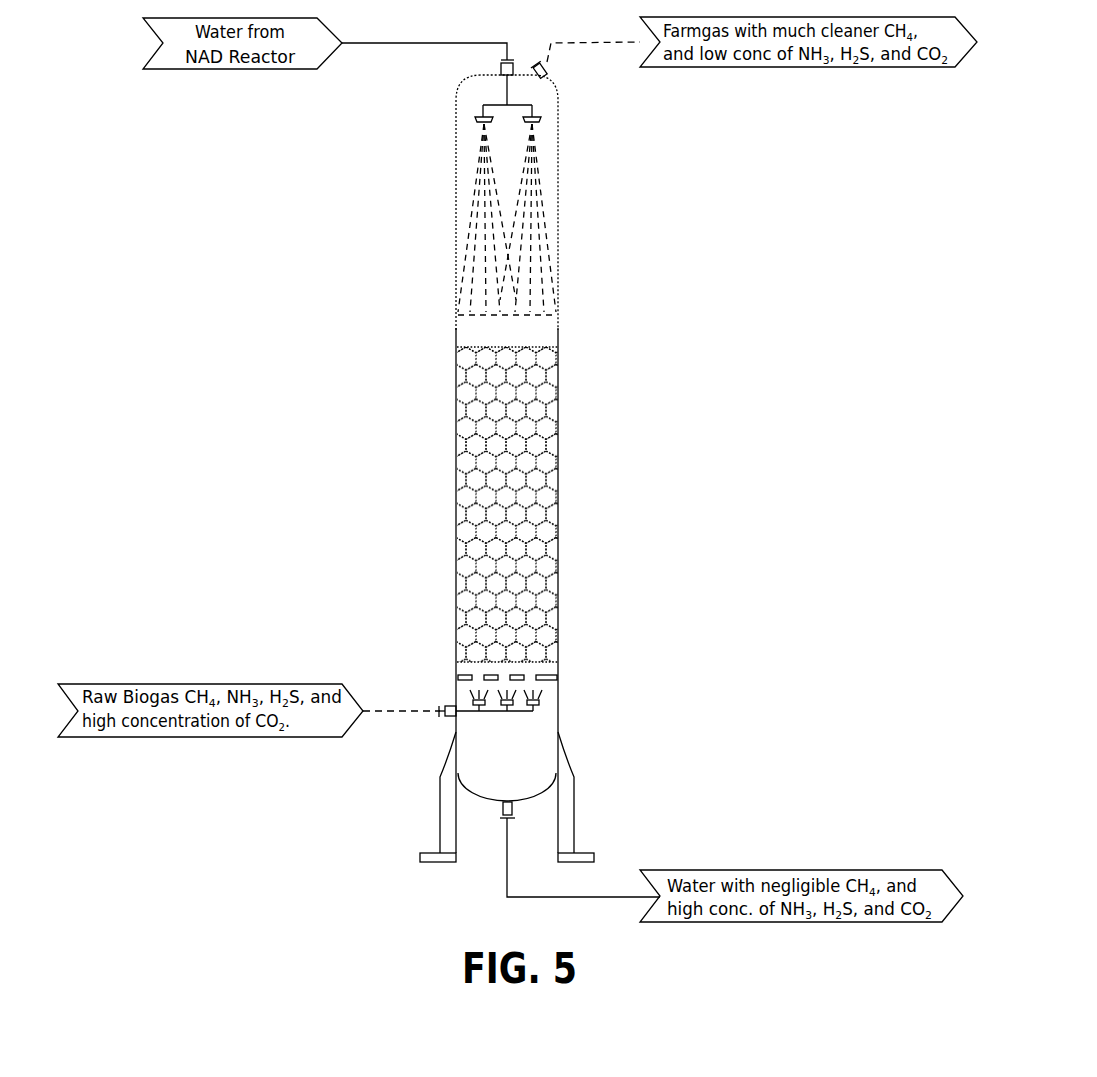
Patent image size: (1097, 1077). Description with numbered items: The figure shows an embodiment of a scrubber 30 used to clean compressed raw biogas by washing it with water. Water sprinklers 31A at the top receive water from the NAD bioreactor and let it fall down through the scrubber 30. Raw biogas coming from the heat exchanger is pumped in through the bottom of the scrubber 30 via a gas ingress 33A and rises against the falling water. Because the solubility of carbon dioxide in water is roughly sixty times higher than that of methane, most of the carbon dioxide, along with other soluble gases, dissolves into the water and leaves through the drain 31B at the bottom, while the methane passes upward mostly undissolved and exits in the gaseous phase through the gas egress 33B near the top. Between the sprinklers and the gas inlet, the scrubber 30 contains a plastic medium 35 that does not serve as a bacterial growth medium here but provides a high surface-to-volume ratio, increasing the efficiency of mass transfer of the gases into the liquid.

The scrubber 30 is at (648, 337).
The water sprinklers 31A is at (500, 90).
The drain 31B is at (512, 806).
The gas ingress 33A is at (446, 706).
The gas egress 33B is at (545, 78).
The plastic medium 35 is at (517, 512).